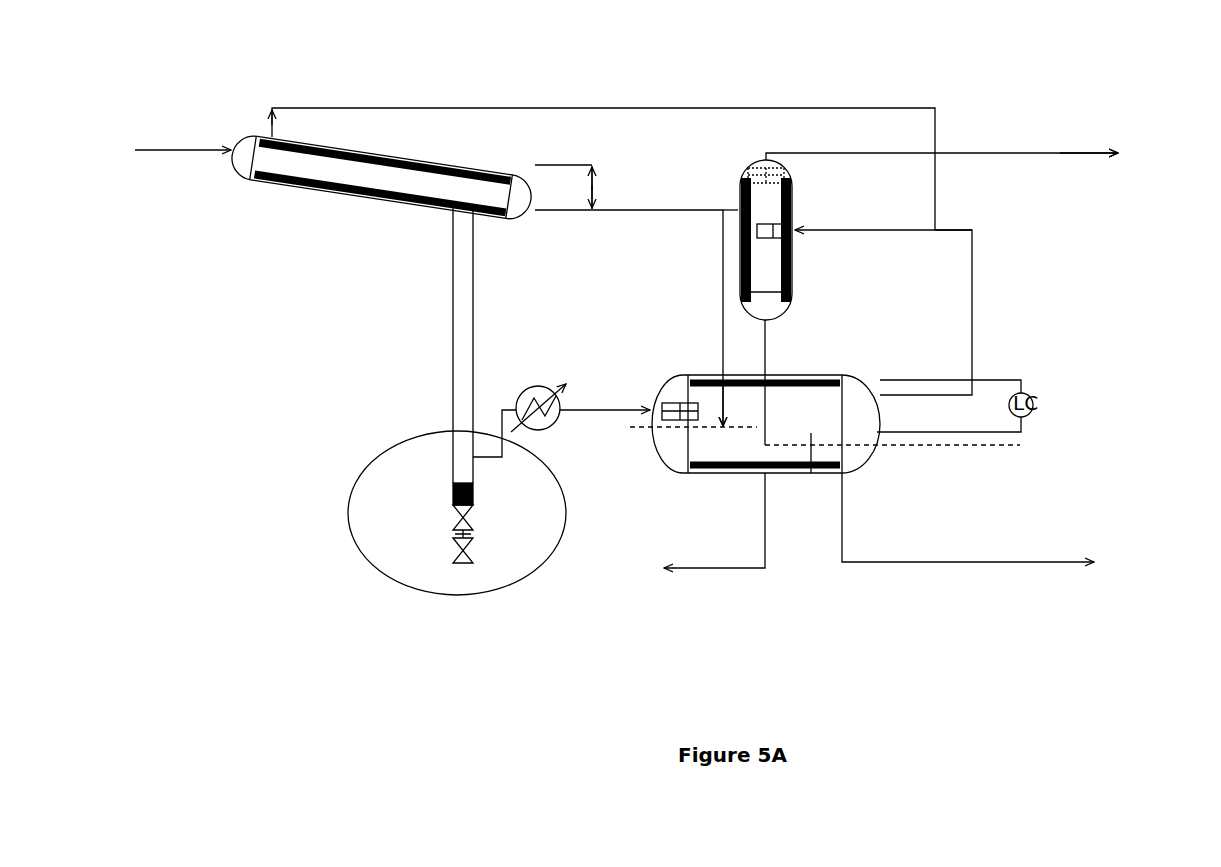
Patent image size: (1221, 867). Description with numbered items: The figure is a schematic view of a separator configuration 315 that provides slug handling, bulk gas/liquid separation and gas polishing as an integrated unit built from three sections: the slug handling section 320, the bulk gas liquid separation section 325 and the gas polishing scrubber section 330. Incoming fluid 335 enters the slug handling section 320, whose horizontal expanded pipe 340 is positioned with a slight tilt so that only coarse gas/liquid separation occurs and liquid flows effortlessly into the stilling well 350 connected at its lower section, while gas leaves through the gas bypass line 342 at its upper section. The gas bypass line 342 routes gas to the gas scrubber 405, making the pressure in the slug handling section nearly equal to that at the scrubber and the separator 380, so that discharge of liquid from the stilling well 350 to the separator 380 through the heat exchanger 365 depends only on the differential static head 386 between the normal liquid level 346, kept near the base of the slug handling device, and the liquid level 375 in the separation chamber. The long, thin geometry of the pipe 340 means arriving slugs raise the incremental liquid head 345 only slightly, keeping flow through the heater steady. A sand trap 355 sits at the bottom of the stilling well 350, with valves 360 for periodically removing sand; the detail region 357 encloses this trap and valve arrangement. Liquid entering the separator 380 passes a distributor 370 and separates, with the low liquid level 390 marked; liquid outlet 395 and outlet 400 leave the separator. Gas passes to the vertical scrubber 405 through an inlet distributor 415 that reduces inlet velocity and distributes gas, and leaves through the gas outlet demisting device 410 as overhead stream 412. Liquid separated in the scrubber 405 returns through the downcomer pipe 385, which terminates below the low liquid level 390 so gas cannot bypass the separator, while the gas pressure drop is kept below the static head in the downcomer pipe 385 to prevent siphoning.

The separator configuration 315 is at (333, 709).
The slug handling section 320 is at (294, 316).
The bulk gas liquid separation section 325 is at (1092, 323).
The gas polishing scrubber section 330 is at (1020, 232).
The feed stream 335 is at (183, 136).
The horizontal expanded pipe 340 is at (333, 205).
The gas bypass line 342 is at (488, 103).
The incremental liquid head 345 is at (596, 187).
The normal liquid level 346 is at (627, 215).
The stilling well 350 is at (452, 292).
The sand trap 355 is at (452, 499).
The detail region 357 is at (388, 446).
The valves 360 is at (490, 534).
The heat exchanger 365 is at (561, 405).
The distributor box 370 is at (671, 400).
The liquid level 375 is at (681, 440).
The separator 380 is at (725, 480).
The downcomer pipe 385 is at (768, 362).
The differential static head 386 is at (724, 362).
The low liquid level 390 is at (925, 455).
The bottom outlet stream 395 is at (681, 530).
The second outlet stream 400 is at (994, 525).
The gas scrubber 405 is at (793, 270).
The gas outlet demisting device 410 is at (795, 177).
The overhead vapor stream 412 is at (1126, 165).
The inlet distributor 415 is at (737, 212).